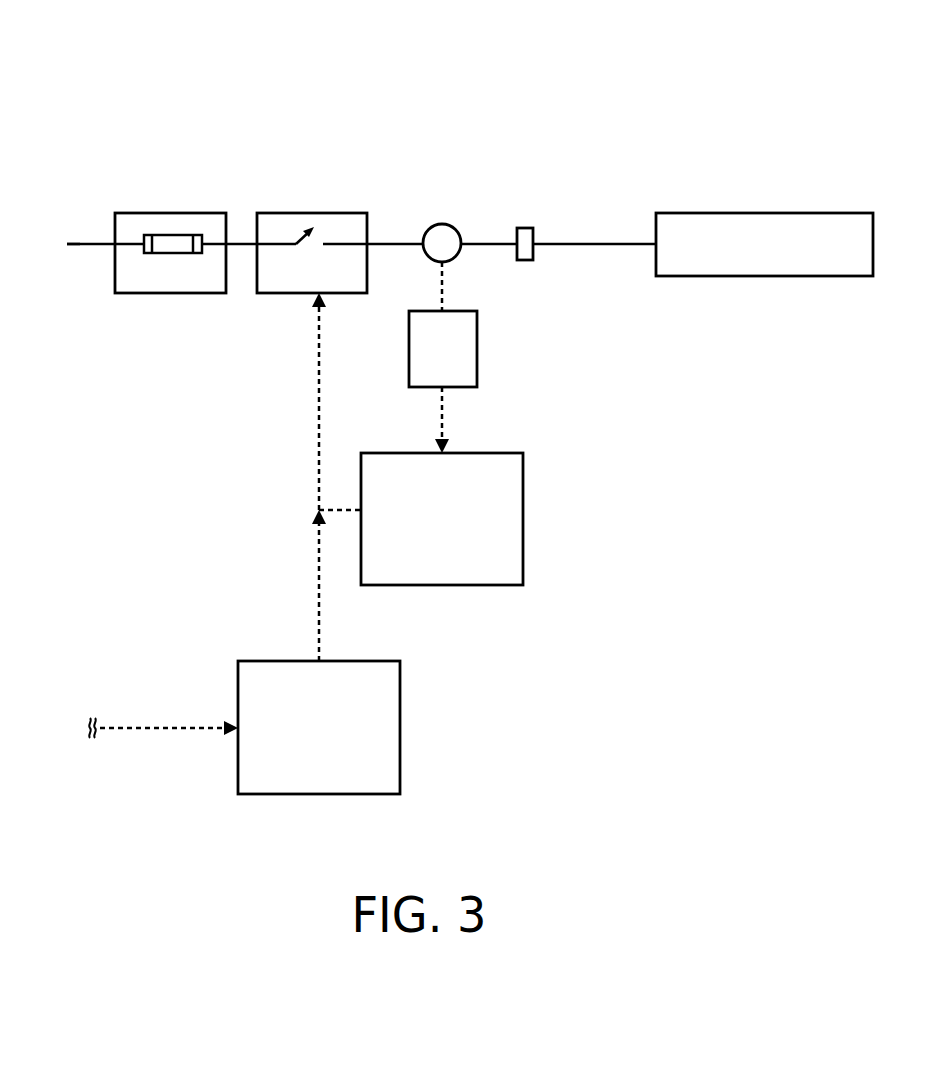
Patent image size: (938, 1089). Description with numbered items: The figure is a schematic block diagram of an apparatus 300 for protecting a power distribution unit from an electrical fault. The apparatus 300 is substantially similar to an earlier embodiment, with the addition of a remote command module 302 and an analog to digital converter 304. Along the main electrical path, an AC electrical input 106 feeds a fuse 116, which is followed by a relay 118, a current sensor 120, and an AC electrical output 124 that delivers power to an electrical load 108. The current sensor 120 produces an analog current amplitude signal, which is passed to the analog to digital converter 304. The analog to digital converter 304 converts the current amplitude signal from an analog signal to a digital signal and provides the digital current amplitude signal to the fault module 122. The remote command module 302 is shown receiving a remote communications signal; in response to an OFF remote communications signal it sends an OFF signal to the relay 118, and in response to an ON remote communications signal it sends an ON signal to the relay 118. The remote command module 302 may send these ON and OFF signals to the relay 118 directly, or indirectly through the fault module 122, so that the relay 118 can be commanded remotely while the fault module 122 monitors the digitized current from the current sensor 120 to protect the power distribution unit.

The apparatus 300 is at (96, 49).
The AC electrical input 106 is at (67, 244).
The fuse 116 is at (150, 279).
The relay 118 is at (290, 274).
The current sensor 120 is at (442, 224).
The AC electrical output 124 is at (519, 228).
The electrical load 108 is at (744, 256).
The analog to digital converter 304 is at (423, 376).
The fault module 122 is at (422, 546).
The remote command module 302 is at (299, 784).